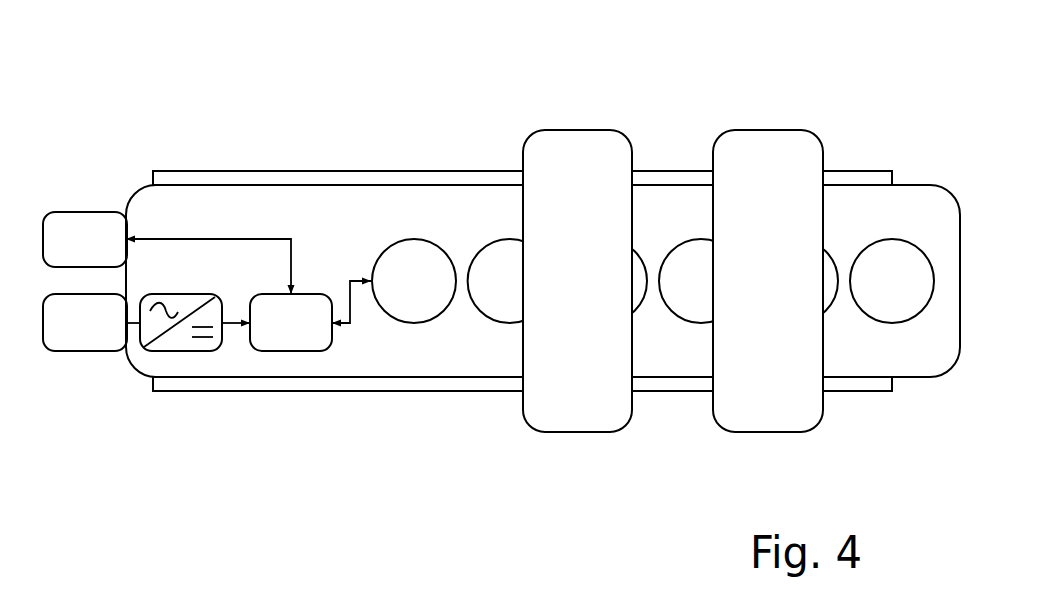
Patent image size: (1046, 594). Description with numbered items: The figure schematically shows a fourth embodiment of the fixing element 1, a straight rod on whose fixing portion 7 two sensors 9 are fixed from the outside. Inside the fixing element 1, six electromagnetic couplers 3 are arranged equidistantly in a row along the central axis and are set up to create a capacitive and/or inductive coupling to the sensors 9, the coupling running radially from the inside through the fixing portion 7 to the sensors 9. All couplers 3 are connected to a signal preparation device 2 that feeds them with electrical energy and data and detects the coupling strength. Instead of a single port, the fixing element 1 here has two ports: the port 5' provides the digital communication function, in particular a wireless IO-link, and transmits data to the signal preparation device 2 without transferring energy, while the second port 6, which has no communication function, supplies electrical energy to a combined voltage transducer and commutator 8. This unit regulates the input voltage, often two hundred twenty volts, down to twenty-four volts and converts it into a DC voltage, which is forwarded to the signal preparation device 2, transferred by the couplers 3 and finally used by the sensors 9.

The fixing element 1 is at (131, 176).
The signal preparation device 2 is at (278, 351).
The electromagnetic couplers 3 is at (874, 243).
The port 5' is at (85, 174).
The second port 6 is at (90, 351).
The fixing portion 7 is at (880, 171).
The combined voltage transducer and commutator 8 is at (177, 351).
The sensors 9 is at (748, 432).